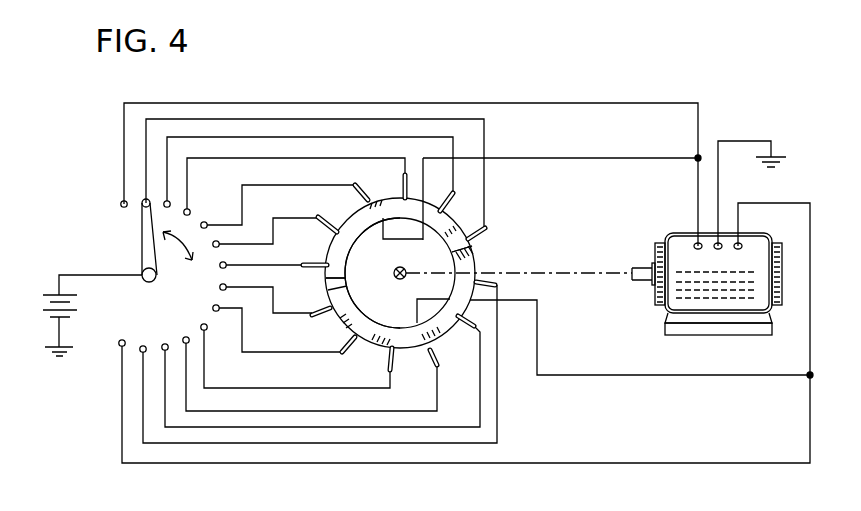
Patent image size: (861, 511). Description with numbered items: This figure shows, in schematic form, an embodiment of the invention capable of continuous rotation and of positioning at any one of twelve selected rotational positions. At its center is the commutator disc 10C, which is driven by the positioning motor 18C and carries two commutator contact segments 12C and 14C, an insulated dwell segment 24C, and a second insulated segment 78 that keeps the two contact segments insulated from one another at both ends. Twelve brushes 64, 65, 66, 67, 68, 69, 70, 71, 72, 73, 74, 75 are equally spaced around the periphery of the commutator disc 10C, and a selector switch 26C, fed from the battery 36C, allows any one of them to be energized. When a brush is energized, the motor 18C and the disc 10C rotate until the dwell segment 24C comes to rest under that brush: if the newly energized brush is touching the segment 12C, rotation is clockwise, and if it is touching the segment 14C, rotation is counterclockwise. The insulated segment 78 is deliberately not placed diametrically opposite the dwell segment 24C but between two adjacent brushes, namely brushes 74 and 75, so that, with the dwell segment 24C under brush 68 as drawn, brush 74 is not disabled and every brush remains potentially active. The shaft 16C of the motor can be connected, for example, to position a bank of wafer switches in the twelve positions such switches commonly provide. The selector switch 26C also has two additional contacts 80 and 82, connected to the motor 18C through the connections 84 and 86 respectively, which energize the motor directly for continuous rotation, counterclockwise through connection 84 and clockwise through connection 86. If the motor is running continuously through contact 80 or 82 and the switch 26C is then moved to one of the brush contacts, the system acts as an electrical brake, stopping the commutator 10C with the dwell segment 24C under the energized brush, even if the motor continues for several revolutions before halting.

The connection 84 is at (454, 103).
The contact 80 is at (121, 205).
The selector switch 26C is at (142, 240).
The battery 36C is at (50, 294).
The contact 82 is at (120, 343).
The connection 86 is at (386, 464).
The commutator disc 10C is at (420, 262).
The commutator segment 12C is at (365, 318).
The commutator segment 14C is at (355, 235).
The insulated segment 78 is at (327, 283).
The insulated dwell segment 24C is at (466, 244).
The brush 64 is at (334, 222).
The brush 65 is at (365, 193).
The brush 66 is at (407, 172).
The brush 67 is at (447, 199).
The brush 68 is at (472, 228).
The brush 69 is at (494, 285).
The brush 70 is at (470, 322).
The brush 71 is at (440, 365).
The brush 72 is at (392, 372).
The brush 73 is at (347, 352).
The brush 74 is at (320, 316).
The brush 75 is at (315, 262).
The shaft 16C is at (554, 272).
The positioning motor 18C is at (720, 295).